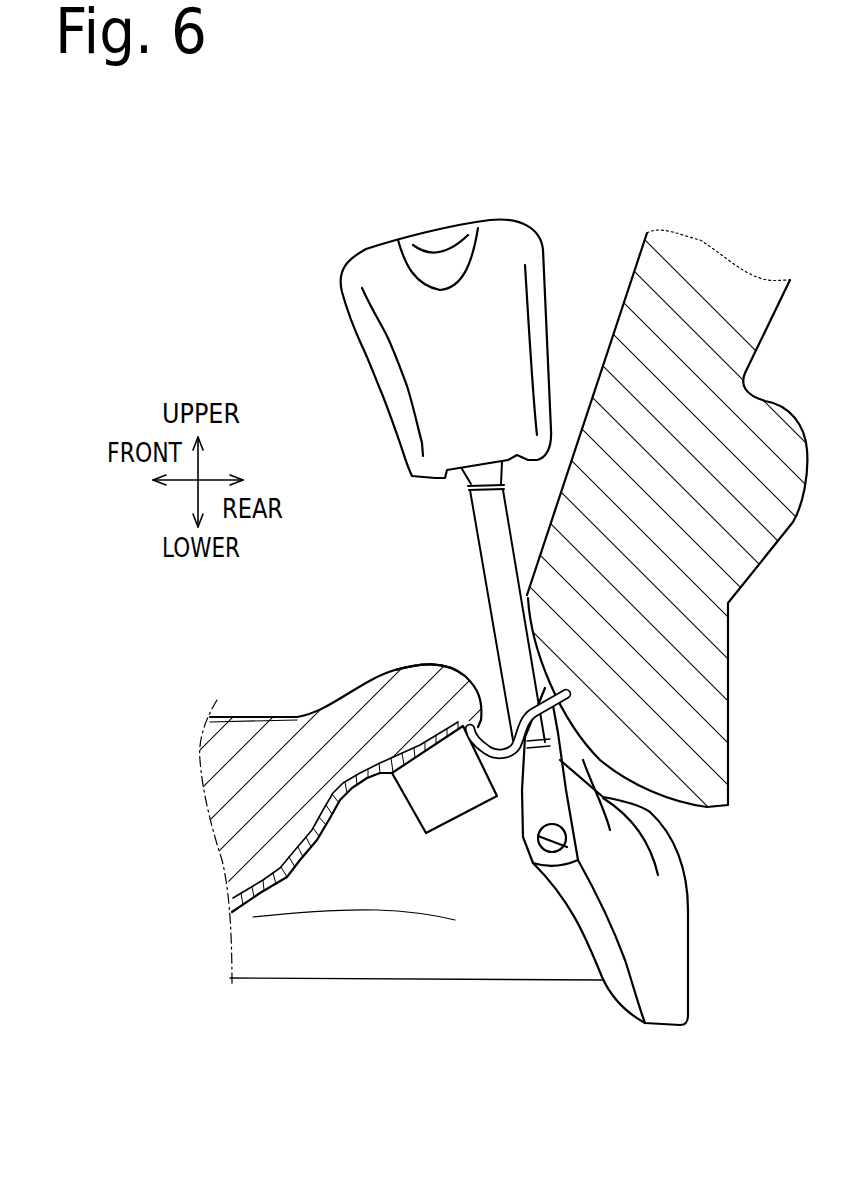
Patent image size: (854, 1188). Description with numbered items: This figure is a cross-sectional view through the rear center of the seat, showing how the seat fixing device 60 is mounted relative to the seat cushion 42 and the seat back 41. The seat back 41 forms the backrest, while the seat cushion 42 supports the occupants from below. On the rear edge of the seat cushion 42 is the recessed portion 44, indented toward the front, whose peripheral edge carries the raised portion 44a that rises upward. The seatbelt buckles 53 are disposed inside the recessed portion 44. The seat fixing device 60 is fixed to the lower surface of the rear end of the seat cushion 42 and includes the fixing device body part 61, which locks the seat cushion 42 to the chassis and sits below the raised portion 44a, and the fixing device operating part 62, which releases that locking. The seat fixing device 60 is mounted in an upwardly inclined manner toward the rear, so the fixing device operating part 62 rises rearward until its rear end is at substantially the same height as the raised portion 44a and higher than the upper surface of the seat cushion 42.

The seat back 41 is at (723, 683).
The seat cushion 42 is at (240, 717).
The recessed portion 44 is at (492, 698).
The raised portion 44a is at (417, 670).
The seatbelt buckle 53 is at (392, 368).
The seat fixing device 60 is at (602, 978).
The fixing device body part 61 is at (438, 800).
The fixing device operating part 62 is at (540, 712).